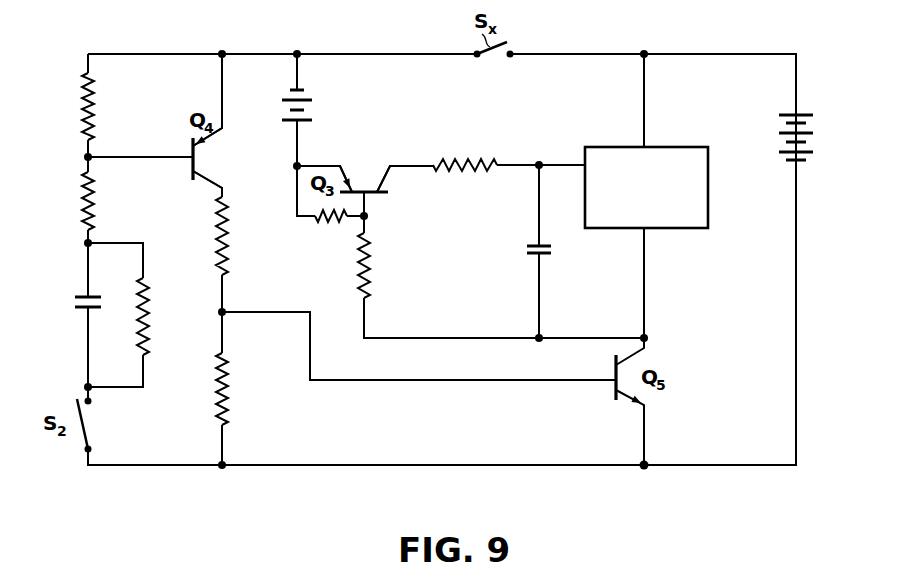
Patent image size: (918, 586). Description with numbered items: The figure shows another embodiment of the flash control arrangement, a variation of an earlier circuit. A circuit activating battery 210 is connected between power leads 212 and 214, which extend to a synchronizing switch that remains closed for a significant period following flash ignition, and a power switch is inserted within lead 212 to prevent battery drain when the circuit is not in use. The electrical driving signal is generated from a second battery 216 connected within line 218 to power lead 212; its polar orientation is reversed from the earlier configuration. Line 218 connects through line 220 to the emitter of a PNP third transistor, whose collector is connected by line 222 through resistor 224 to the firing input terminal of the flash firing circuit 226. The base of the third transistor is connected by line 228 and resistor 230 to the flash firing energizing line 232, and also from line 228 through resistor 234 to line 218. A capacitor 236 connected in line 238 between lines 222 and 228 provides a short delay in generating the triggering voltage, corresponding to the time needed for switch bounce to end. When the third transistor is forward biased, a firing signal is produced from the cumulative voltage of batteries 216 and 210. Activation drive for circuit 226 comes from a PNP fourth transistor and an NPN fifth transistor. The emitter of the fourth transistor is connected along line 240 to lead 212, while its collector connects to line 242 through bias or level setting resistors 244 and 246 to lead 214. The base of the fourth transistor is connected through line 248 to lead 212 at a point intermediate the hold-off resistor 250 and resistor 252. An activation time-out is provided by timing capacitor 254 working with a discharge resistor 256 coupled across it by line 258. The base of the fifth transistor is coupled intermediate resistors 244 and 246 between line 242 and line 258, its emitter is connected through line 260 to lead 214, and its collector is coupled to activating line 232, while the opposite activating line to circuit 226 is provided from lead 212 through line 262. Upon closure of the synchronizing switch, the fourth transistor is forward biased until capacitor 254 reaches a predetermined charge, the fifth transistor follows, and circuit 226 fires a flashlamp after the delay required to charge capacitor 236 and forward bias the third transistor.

The circuit activating battery 210 is at (812, 126).
The power lead 212 is at (674, 53).
The power lead 214 is at (798, 318).
The second battery 216 is at (310, 112).
The line 218 is at (300, 145).
The line 220 is at (318, 166).
The line 222 is at (402, 164).
The resistor 224 is at (482, 163).
The flash firing circuit 226 is at (665, 148).
The line 228 is at (366, 200).
The resistor 230 is at (368, 280).
The flash firing energizing line 232 is at (646, 292).
The resistor 234 is at (328, 225).
The capacitor 236 is at (526, 249).
The line 238 is at (541, 293).
The line 240 is at (222, 103).
The line 242 is at (228, 189).
The bias or level setting resistor 244 is at (230, 243).
The bias or level setting resistor 246 is at (230, 390).
The line 248 is at (133, 157).
The hold-off resistor 250 is at (80, 108).
The resistor 252 is at (80, 184).
The timing capacitor 254 is at (78, 297).
The discharge resistor 256 is at (149, 300).
The line 258 is at (125, 243).
The line 260 is at (646, 438).
The line 262 is at (645, 96).